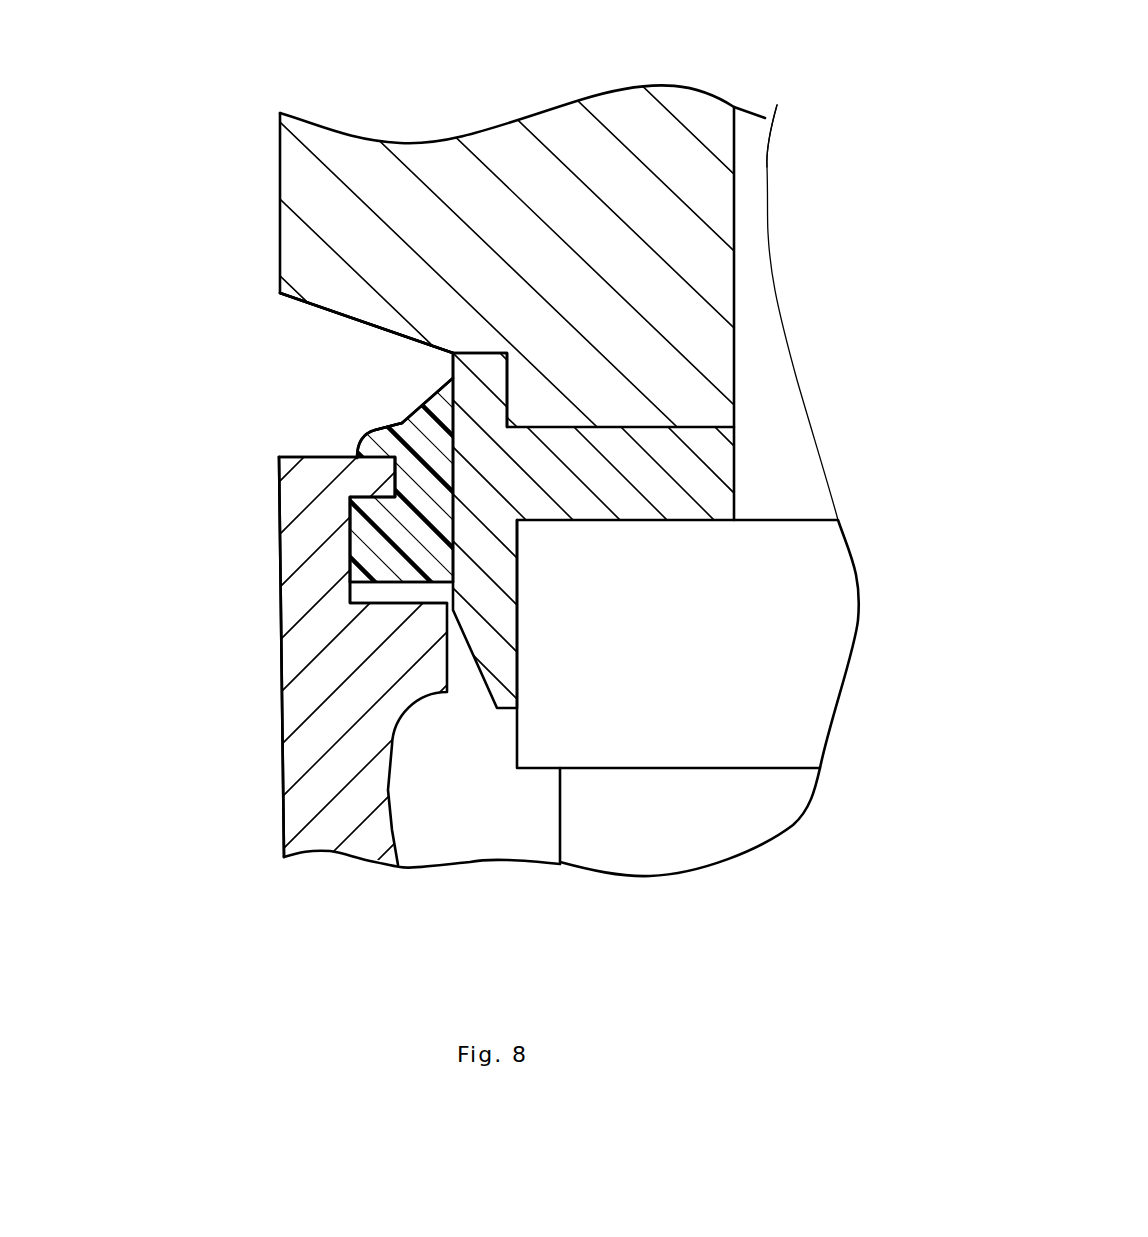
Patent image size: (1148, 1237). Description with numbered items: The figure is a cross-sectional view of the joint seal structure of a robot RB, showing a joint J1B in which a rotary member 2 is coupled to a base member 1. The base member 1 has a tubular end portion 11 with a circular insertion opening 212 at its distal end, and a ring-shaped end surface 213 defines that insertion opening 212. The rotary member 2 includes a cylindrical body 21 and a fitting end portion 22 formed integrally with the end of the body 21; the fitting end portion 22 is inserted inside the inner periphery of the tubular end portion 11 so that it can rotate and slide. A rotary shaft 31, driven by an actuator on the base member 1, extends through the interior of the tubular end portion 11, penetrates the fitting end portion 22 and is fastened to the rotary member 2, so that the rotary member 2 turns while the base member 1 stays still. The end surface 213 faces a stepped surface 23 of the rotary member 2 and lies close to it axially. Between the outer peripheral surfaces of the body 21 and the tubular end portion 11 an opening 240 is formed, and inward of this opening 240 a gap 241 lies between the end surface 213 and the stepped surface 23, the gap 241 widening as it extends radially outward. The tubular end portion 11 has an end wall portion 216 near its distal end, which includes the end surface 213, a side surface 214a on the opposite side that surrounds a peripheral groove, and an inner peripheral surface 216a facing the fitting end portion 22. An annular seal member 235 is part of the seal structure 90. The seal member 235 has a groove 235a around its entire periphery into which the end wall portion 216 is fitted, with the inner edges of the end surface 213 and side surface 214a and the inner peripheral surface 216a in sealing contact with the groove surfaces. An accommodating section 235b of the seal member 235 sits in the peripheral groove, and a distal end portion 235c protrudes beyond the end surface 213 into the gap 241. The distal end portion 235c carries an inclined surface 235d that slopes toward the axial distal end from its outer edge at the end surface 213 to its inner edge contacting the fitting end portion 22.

The base member 1 is at (447, 735).
The rotary member 2 is at (545, 361).
The tubular end portion 11 is at (345, 838).
The body 21 is at (690, 240).
The fitting end portion 22 is at (710, 460).
The stepped surface 23 is at (313, 305).
The rotary shaft 31 is at (715, 838).
The seal structure 90 is at (383, 506).
The insertion opening 212 is at (460, 423).
The end surface 213 is at (308, 455).
The side surface 214a is at (352, 528).
The end wall portion 216 is at (360, 478).
The inner peripheral surface 216a is at (528, 530).
The seal member 235 is at (397, 585).
The groove 235a is at (347, 460).
The accommodating section 235b is at (377, 562).
The distal end portion 235c is at (436, 402).
The inclined surface 235d is at (400, 422).
The opening 240 is at (273, 378).
The gap 241 is at (363, 320).
The robot RB is at (262, 841).
The joint J1B is at (838, 408).